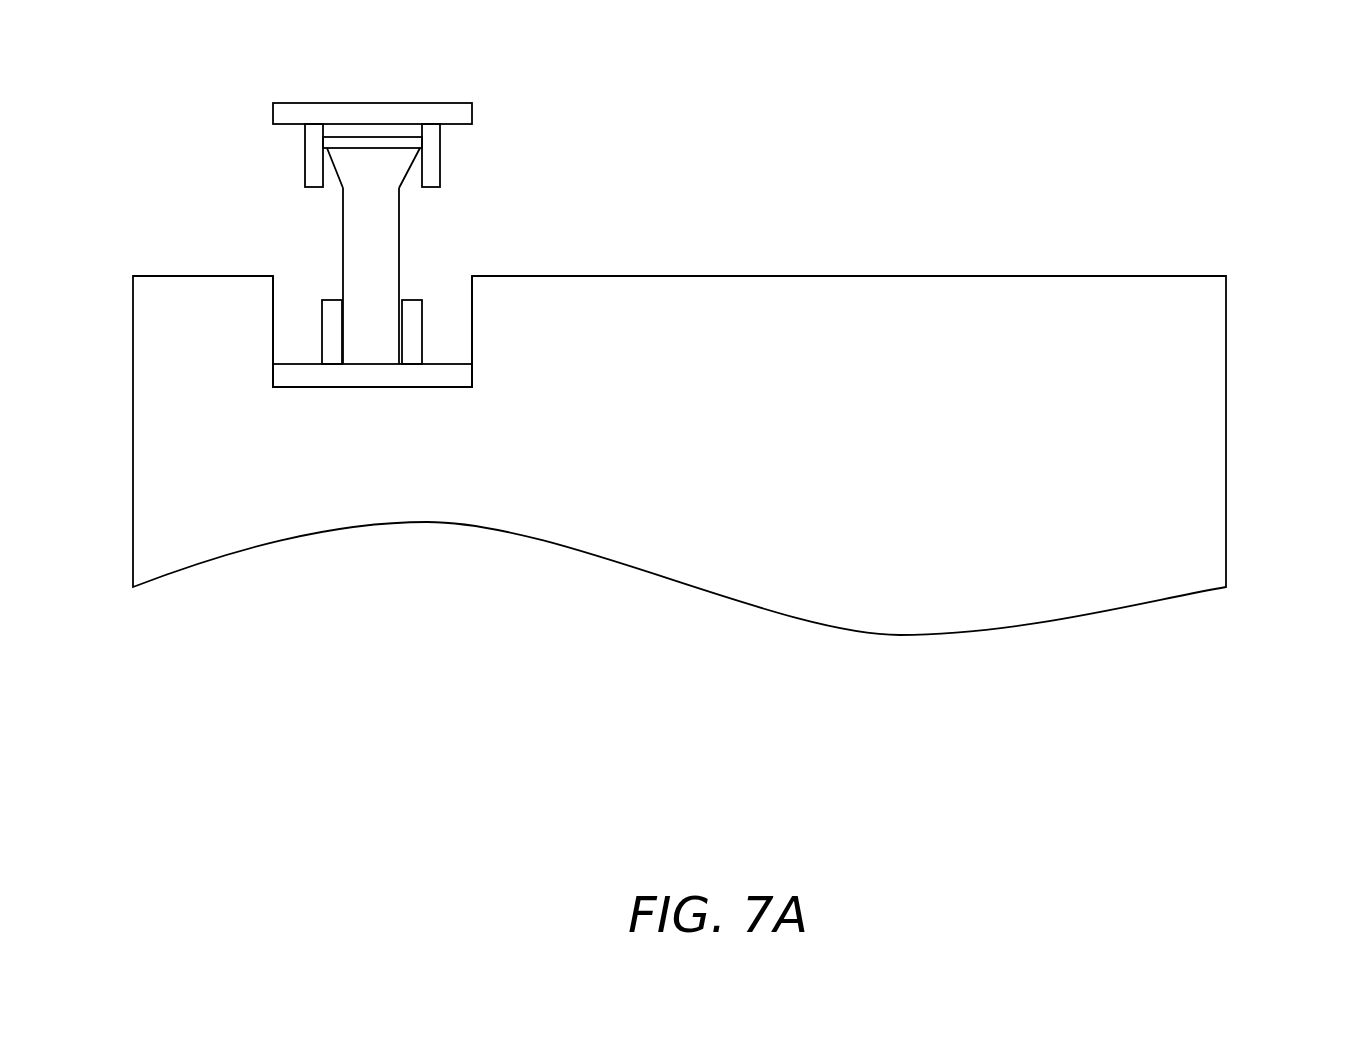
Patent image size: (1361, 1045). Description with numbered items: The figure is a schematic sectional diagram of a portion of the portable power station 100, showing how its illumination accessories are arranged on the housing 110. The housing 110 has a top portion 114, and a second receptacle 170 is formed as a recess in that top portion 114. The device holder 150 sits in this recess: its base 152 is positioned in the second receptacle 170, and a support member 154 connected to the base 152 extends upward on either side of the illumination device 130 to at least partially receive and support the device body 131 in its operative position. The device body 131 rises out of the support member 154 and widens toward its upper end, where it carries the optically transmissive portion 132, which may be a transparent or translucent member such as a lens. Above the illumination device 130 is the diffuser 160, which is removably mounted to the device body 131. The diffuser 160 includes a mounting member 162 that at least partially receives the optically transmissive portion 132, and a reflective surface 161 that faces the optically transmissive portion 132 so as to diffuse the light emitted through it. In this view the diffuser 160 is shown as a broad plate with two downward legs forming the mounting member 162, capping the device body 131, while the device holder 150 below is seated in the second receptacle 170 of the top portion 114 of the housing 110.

The portable power station 100 is at (701, 339).
The housing 110 is at (698, 417).
The top portion 114 is at (1080, 262).
The illumination device 130 is at (334, 211).
The device body 131 is at (345, 217).
The optically transmissive portion 132 is at (377, 145).
The device holder 150 is at (291, 317).
The base 152 is at (308, 378).
The support member 154 is at (332, 332).
The diffuser 160 is at (384, 115).
The reflective surface 161 is at (278, 124).
The mounting member 162 is at (313, 168).
The second receptacle 170 is at (284, 293).